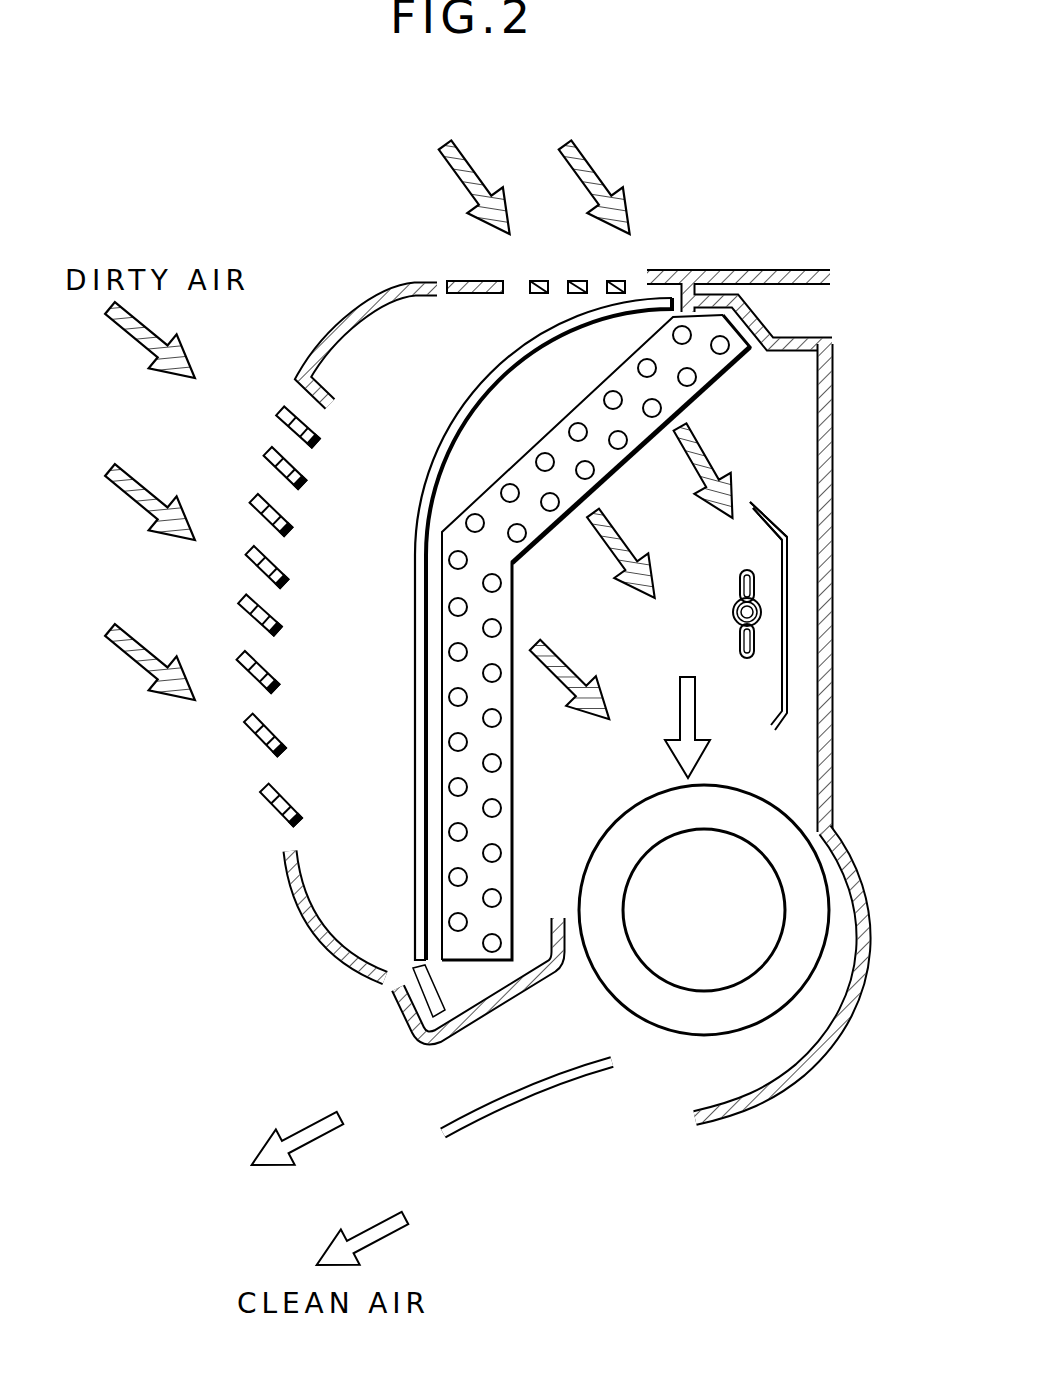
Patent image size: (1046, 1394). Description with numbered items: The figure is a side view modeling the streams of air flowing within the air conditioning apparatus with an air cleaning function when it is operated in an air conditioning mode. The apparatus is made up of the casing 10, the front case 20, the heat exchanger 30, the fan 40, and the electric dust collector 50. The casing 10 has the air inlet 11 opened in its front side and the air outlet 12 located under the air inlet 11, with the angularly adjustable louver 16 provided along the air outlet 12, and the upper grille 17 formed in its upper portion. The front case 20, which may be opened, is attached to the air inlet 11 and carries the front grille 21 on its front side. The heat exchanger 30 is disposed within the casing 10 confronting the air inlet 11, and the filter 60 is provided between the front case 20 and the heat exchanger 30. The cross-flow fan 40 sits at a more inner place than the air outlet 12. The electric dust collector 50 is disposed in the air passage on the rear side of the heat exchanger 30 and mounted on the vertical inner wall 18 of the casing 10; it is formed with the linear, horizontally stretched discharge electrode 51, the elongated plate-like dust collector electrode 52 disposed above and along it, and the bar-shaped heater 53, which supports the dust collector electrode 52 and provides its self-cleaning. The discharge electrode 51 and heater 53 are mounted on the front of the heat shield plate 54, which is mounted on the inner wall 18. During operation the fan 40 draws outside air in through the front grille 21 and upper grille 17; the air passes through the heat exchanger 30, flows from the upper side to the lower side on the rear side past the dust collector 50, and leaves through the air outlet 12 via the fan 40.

The casing 10 is at (842, 362).
The air inlet 11 is at (322, 603).
The air outlet 12 is at (645, 1080).
The louver 16 is at (495, 1135).
The upper grille 17 is at (548, 278).
The inner wall 18 is at (838, 453).
The front case 20 is at (310, 915).
The front grille 21 is at (262, 758).
The heat exchanger 30 is at (455, 772).
The fan 40 is at (785, 1010).
The electric dust collector 50 is at (800, 713).
The discharge electrode 51 is at (706, 692).
The dust collector electrode 52 is at (758, 642).
The heater 53 is at (760, 610).
The heat shield plate 54 is at (792, 538).
The filter 60 is at (450, 420).